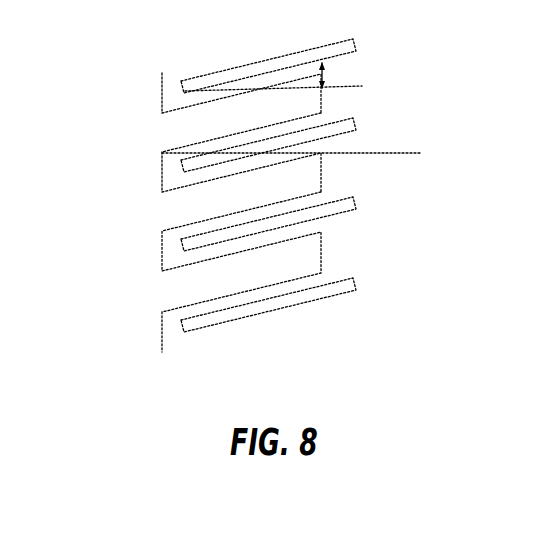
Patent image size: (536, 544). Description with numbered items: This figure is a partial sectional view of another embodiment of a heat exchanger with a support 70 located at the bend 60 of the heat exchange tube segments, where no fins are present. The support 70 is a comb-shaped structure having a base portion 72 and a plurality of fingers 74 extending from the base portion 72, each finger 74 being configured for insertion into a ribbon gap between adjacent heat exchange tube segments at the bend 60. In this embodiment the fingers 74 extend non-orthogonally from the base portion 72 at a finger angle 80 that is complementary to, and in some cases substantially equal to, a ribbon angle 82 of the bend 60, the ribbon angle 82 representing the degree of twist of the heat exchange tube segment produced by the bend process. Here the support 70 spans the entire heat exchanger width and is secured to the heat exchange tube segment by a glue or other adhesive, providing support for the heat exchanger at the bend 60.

The support 70 is at (146, 49).
The base portion 72 is at (122, 315).
The fingers 74 is at (168, 213).
The bend 60 is at (275, 219).
The finger angle 80 is at (266, 152).
The ribbon angle 82 is at (323, 73).